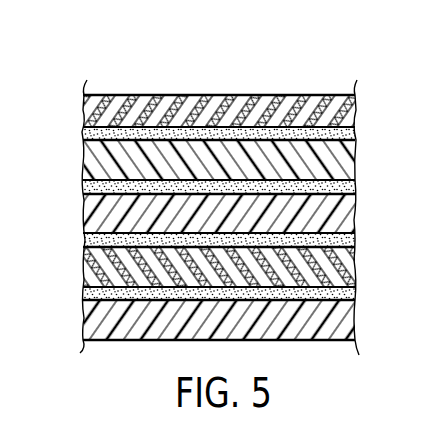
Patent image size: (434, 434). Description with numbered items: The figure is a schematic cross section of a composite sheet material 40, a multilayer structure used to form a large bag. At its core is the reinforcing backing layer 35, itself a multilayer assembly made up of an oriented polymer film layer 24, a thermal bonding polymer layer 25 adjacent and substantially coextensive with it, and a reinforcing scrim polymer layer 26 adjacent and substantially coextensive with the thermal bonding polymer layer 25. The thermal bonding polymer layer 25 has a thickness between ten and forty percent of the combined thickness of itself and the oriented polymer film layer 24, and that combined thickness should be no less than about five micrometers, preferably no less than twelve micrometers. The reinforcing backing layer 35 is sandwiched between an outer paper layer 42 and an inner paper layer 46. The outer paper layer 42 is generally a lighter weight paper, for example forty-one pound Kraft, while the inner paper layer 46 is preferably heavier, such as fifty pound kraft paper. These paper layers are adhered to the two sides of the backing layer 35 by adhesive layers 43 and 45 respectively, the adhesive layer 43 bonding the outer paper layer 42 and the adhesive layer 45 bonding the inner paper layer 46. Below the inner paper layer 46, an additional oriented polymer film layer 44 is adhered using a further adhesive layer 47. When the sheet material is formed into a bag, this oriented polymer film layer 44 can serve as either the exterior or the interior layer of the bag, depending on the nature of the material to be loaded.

The composite sheet material 40 is at (187, 57).
The outer paper layer 42 is at (345, 112).
The adhesive layer 43 is at (358, 133).
The oriented polymer film layer 24 is at (347, 158).
The thermal bonding polymer layer 25 is at (353, 187).
The reinforcing scrim polymer layer 26 is at (338, 216).
The reinforcing backing layer 35 is at (70, 140).
The adhesive layer 45 is at (342, 243).
The inner paper layer 46 is at (345, 262).
The adhesive layer 47 is at (347, 296).
The oriented polymer film layer 44 is at (340, 322).